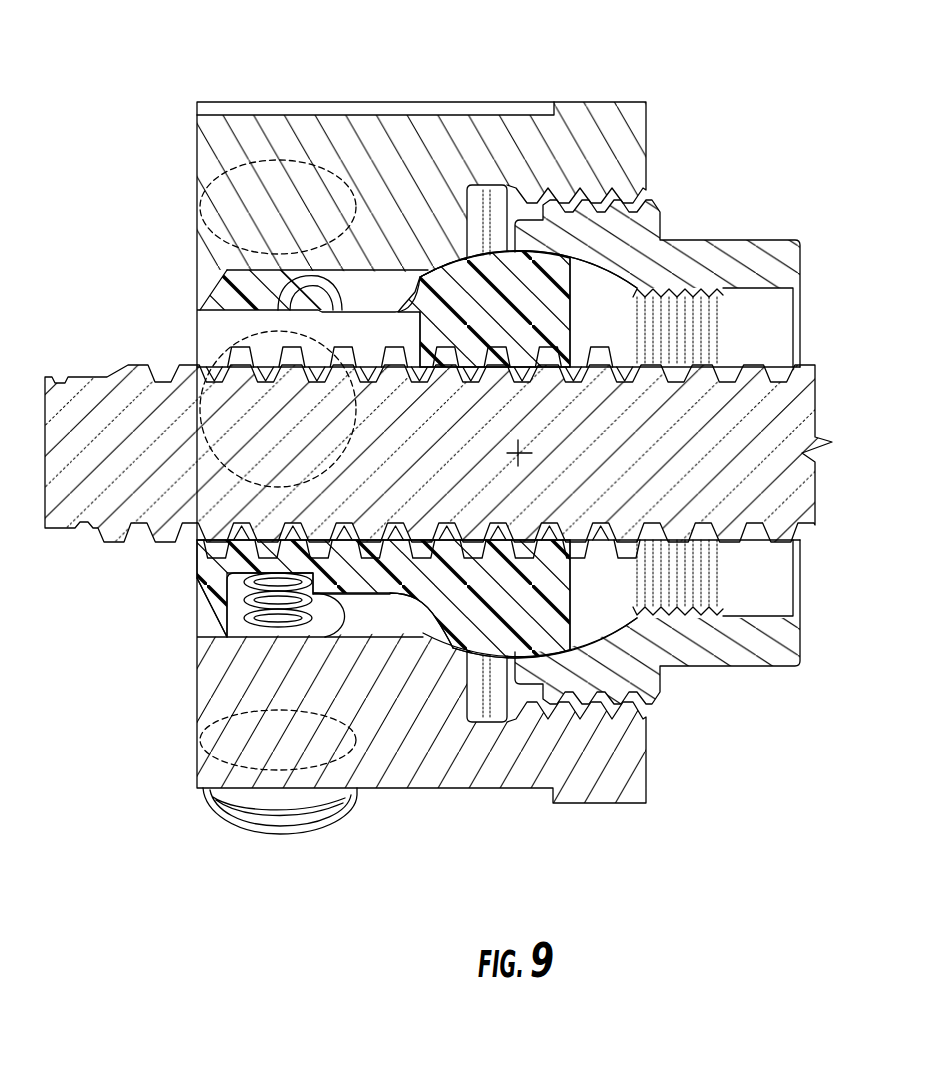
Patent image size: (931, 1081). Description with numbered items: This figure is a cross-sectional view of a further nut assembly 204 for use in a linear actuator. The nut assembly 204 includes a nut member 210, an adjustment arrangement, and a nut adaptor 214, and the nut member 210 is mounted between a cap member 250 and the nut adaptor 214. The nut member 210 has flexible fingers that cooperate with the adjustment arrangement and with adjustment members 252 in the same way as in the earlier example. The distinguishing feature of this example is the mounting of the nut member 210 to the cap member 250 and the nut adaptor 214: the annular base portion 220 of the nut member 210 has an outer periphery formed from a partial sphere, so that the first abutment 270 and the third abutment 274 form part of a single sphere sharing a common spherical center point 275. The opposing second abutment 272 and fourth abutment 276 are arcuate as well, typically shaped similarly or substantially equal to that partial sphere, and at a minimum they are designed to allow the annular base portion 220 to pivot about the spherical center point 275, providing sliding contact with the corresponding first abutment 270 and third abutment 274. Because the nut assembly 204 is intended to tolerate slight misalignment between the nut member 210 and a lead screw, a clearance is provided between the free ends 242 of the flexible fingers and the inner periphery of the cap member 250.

The nut assembly 204 is at (152, 172).
The nut member 210 is at (248, 283).
The nut adaptor 214 is at (775, 267).
The annular base portion 220 is at (482, 187).
The free end 242 is at (200, 569).
The cap member 250 is at (340, 145).
The adjustment member 252 is at (343, 848).
The first abutment 270 is at (547, 692).
The second abutment 272 is at (540, 618).
The third abutment 274 is at (453, 633).
The spherical center point 275 is at (522, 458).
The fourth abutment 276 is at (440, 540).